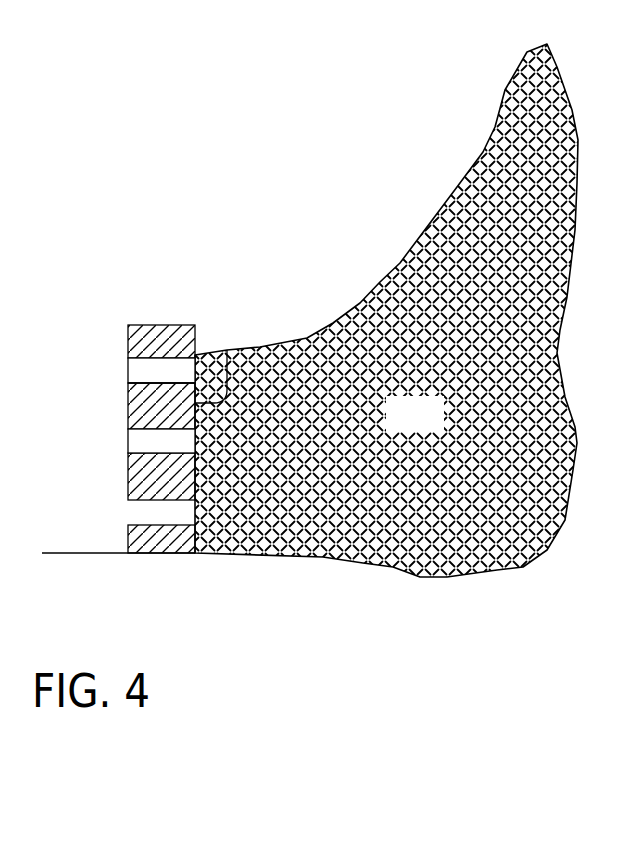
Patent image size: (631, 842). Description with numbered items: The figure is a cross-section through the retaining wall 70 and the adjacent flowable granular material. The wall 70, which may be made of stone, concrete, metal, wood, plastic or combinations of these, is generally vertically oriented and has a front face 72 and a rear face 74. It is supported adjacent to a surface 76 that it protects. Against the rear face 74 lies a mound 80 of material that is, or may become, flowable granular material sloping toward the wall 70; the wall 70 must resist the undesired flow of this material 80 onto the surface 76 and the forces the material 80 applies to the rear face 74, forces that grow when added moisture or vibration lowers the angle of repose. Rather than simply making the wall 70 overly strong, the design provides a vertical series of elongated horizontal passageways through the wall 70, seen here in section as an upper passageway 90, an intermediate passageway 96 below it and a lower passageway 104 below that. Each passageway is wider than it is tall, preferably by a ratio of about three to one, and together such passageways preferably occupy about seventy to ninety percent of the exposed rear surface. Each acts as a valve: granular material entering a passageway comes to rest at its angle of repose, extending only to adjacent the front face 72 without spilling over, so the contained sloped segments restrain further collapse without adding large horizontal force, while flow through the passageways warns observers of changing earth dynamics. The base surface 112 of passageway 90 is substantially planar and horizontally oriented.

The retaining wall 70 is at (156, 438).
The front face 72 is at (128, 393).
The rear face 74 is at (227, 350).
The surface 76 is at (92, 553).
The mound 80 is at (431, 427).
The elongated horizontal passageway 90 is at (145, 373).
The elongated horizontal passageway 96 is at (137, 443).
The elongated horizontal passageway 104 is at (167, 520).
The base surface 112 is at (128, 323).